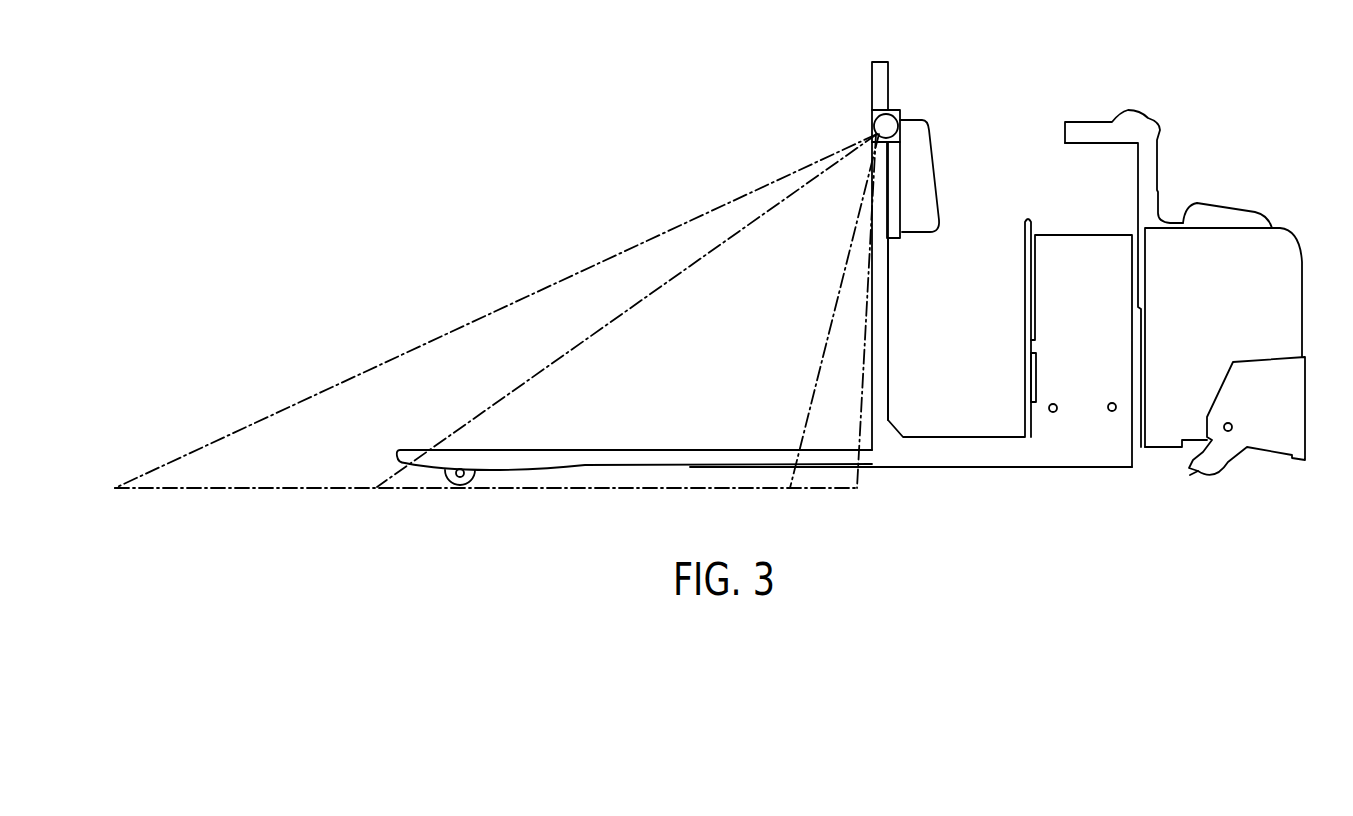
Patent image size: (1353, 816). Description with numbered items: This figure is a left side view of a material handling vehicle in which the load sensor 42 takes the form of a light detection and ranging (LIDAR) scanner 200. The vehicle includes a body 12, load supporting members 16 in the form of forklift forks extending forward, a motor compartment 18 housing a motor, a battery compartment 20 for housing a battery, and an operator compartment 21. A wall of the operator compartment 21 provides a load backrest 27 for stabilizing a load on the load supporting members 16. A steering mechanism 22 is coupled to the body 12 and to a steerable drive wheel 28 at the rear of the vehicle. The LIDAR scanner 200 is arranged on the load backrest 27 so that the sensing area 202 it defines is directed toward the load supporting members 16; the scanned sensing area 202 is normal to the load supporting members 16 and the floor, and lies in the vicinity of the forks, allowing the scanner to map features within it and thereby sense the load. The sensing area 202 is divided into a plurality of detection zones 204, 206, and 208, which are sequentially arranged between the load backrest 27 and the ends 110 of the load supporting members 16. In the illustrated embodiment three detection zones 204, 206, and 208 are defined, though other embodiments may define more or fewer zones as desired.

The body 12 is at (1097, 475).
The load supporting members 16 is at (637, 457).
The motor compartment 18 is at (1277, 267).
The battery compartment 20 is at (1078, 252).
The operator compartment 21 is at (966, 421).
The steering mechanism 22 is at (1150, 111).
The load backrest 27 is at (870, 84).
The steerable drive wheel 28 is at (1213, 476).
The load sensor 42 is at (912, 117).
The ends of the load supporting members 110 is at (393, 448).
The LIDAR scanner 200 is at (888, 123).
The sensing area 202 is at (738, 183).
The detection zone 204 is at (832, 482).
The detection zone 206 is at (665, 480).
The detection zone 208 is at (272, 442).